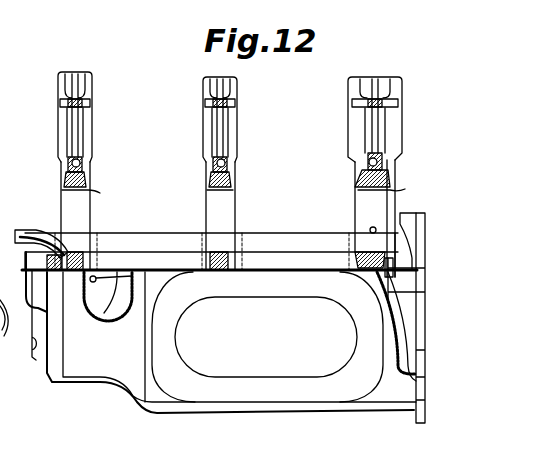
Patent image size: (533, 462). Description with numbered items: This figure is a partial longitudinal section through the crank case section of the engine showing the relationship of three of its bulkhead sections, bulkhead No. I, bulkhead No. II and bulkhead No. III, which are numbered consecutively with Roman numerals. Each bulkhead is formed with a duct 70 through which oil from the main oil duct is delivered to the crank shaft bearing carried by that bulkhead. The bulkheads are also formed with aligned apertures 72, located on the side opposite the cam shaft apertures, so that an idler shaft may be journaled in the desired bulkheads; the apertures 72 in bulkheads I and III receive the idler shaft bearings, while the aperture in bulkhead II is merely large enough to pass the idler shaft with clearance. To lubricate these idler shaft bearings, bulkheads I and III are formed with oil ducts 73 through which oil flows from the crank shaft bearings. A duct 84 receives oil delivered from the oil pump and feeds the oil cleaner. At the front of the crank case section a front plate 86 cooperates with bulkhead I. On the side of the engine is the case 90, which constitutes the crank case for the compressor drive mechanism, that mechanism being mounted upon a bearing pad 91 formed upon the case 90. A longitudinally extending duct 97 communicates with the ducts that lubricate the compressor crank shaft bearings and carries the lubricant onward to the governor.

The bulkhead No. I is at (389, 133).
The bulkhead No. II is at (230, 133).
The bulkhead No. III is at (87, 135).
The duct 70 is at (80, 163).
The aperture 72 is at (80, 214).
The oil duct 73 is at (88, 198).
The duct 84 is at (32, 230).
The front plate 86 is at (415, 410).
The case 90 is at (168, 395).
The bearing pad 91 is at (290, 388).
The longitudinally extending duct 97 is at (106, 313).